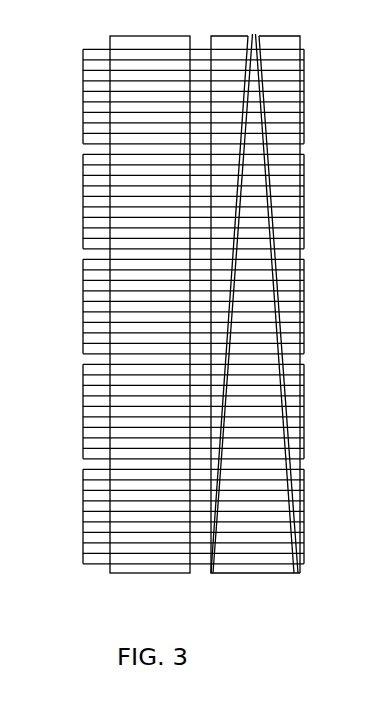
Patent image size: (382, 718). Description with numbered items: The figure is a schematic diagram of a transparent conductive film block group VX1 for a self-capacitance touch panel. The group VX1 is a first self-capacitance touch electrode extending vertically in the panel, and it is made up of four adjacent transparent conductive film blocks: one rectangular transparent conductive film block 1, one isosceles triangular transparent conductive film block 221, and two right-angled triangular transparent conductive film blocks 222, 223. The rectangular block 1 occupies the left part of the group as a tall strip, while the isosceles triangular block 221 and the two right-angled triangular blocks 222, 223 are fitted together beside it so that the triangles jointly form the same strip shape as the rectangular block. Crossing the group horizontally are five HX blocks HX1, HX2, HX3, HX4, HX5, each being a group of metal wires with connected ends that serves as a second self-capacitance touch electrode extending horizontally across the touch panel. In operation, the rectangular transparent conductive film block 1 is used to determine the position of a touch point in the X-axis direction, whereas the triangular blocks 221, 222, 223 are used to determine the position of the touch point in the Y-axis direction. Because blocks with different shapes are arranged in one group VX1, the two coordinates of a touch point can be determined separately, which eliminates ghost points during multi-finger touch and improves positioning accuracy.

The rectangular transparent conductive film block 1 is at (164, 338).
The isosceles triangular transparent conductive film block 221 is at (132, 573).
The right-angled triangular transparent conductive film block 222 is at (227, 575).
The right-angled triangular transparent conductive film block 223 is at (279, 339).
The transparent conductive film block group VX1 is at (238, 338).
The HX block HX1 is at (171, 96).
The HX block HX2 is at (165, 201).
The HX block HX3 is at (165, 306).
The HX block HX4 is at (165, 411).
The HX block HX5 is at (164, 516).